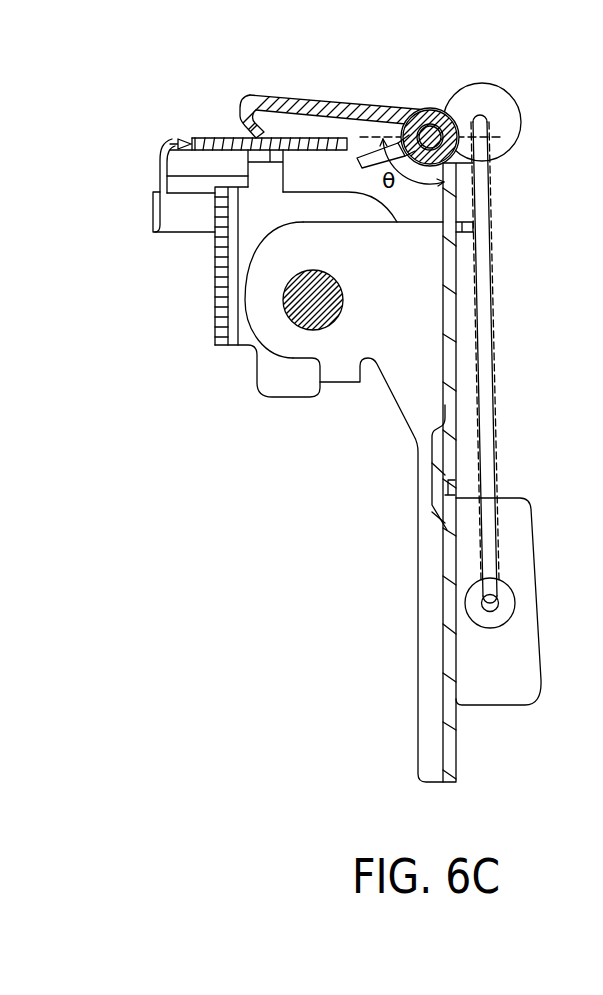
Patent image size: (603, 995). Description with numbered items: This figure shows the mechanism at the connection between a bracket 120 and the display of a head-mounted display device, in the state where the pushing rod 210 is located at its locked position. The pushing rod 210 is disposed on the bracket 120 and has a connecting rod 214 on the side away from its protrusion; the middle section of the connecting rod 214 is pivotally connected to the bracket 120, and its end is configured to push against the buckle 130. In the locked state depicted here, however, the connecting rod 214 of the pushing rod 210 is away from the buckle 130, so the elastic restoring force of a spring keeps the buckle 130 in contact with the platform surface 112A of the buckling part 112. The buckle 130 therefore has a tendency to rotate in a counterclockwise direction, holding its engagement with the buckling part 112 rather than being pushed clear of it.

The buckling part 112 is at (170, 142).
The platform surface 112A is at (320, 139).
The buckle 130 is at (290, 102).
The connecting rod 214 is at (368, 157).
The pushing rod 210 is at (485, 358).
The bracket 120 is at (452, 744).